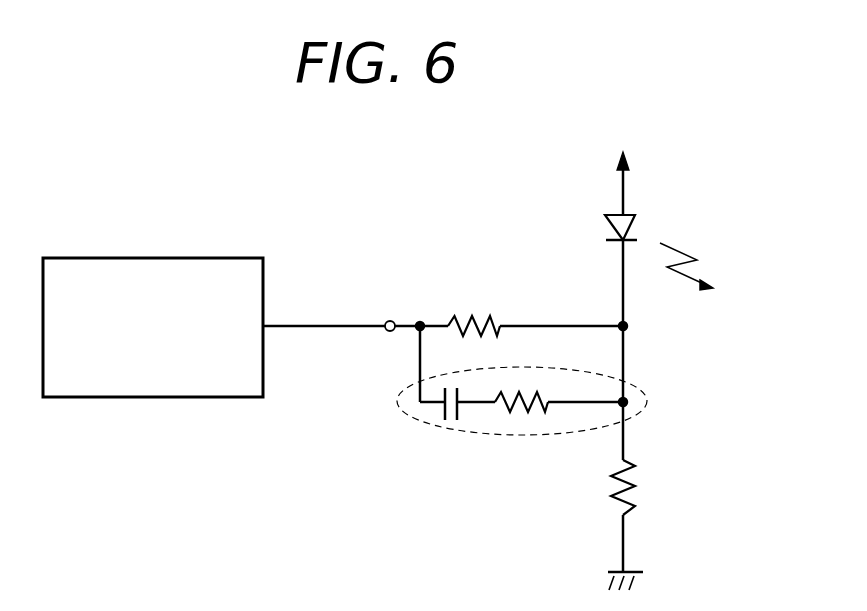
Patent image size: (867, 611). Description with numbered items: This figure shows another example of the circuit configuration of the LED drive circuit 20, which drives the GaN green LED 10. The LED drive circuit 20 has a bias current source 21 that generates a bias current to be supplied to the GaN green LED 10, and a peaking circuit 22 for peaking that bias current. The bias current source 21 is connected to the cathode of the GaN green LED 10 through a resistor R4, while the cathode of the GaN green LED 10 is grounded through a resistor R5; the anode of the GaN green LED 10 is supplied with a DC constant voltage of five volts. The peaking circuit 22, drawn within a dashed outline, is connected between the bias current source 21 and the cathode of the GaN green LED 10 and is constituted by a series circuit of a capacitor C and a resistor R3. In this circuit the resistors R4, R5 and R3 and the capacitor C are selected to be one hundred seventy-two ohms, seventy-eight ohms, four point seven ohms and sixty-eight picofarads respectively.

The LED drive circuit 20 is at (224, 177).
The bias current source 21 is at (193, 258).
The GaN green LED 10 is at (605, 230).
The peaking circuit 22 is at (422, 427).
The capacitor C is at (452, 425).
The resistor R3 is at (522, 416).
The resistor R4 is at (478, 318).
The resistor R5 is at (636, 477).